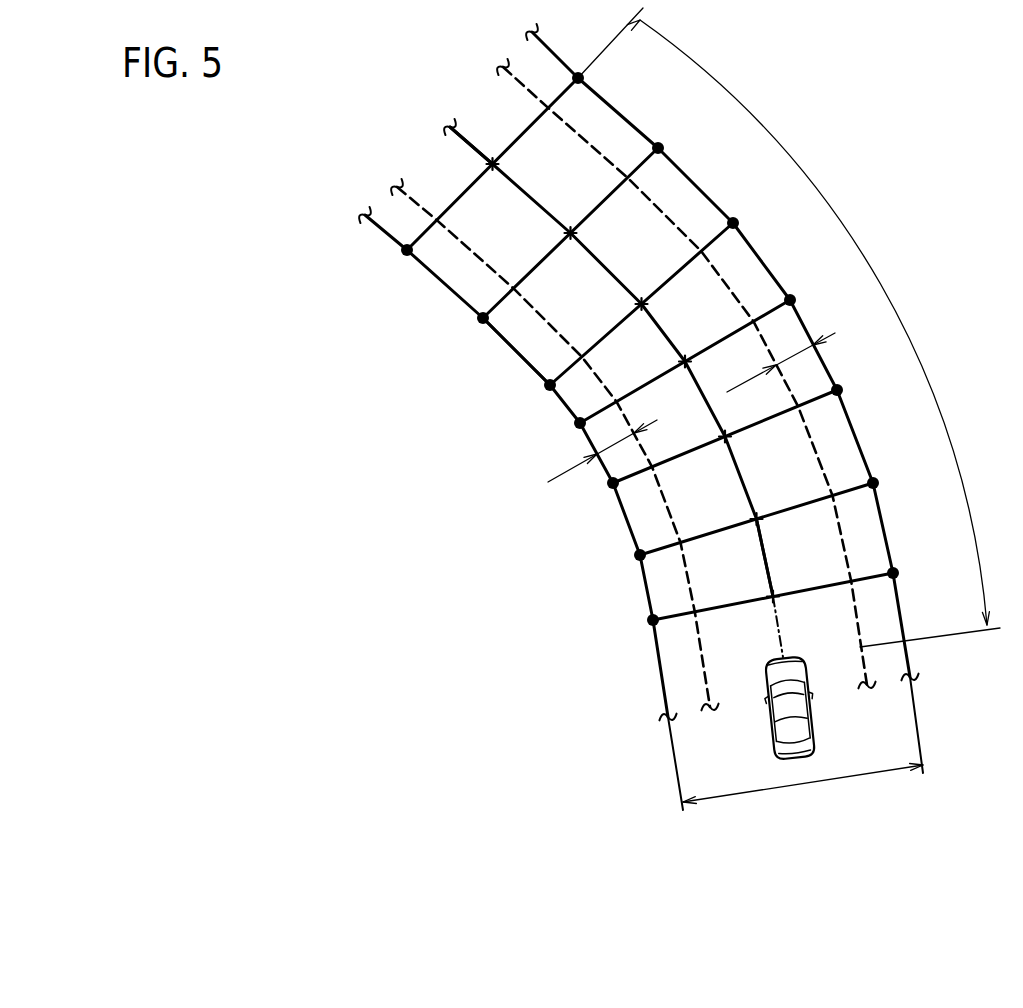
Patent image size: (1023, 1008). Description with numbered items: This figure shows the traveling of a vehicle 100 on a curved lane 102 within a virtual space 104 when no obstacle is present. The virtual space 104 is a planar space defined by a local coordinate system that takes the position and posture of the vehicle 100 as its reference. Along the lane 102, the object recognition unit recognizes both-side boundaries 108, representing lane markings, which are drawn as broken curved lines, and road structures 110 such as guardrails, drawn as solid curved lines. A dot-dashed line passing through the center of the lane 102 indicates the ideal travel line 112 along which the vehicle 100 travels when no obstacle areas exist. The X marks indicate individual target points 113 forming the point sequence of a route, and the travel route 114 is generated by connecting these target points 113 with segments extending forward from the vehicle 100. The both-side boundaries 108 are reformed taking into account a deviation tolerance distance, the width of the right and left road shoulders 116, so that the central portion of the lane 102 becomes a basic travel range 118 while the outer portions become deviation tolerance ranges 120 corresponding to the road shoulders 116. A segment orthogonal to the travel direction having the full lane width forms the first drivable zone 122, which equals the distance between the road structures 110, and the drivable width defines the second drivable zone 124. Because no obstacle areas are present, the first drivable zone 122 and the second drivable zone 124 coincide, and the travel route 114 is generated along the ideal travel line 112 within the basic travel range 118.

The vehicle 100 is at (818, 722).
The lane 102 is at (475, 118).
The virtual space 104 is at (200, 147).
The both-side boundaries 108 is at (570, 127).
The road structures 110 is at (607, 103).
The ideal travel line 112 is at (478, 149).
The target points 113 is at (772, 574).
The travel route 114 is at (588, 248).
The road shoulders 116 is at (668, 646).
The basic travel range 118 is at (752, 650).
The deviation tolerance ranges 120 is at (890, 620).
The first drivable zone 122 is at (486, 311).
The second drivable zone 124 is at (516, 351).